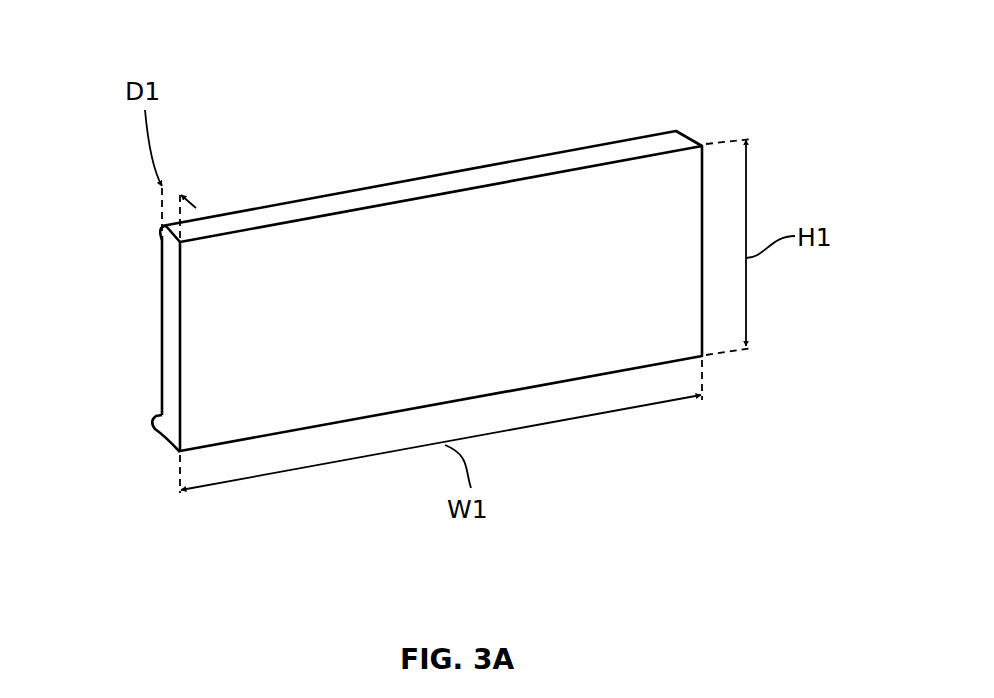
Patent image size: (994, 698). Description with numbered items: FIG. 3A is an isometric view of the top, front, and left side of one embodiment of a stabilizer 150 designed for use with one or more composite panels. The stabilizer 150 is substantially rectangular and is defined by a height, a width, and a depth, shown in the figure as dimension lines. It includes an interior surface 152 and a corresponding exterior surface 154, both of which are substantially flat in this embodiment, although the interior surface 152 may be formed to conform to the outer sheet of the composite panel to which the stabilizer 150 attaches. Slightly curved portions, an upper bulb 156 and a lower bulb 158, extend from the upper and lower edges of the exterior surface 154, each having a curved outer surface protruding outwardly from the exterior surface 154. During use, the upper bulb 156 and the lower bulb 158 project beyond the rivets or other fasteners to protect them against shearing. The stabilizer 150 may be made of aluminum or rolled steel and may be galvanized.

The stabilizer 150 is at (423, 232).
The interior surface 152 is at (447, 250).
The exterior surface 154 is at (160, 336).
The upper bulb 156 is at (150, 239).
The lower bulb 158 is at (155, 428).